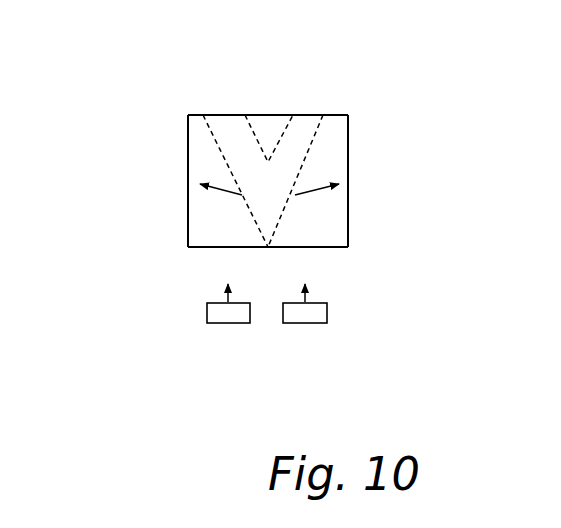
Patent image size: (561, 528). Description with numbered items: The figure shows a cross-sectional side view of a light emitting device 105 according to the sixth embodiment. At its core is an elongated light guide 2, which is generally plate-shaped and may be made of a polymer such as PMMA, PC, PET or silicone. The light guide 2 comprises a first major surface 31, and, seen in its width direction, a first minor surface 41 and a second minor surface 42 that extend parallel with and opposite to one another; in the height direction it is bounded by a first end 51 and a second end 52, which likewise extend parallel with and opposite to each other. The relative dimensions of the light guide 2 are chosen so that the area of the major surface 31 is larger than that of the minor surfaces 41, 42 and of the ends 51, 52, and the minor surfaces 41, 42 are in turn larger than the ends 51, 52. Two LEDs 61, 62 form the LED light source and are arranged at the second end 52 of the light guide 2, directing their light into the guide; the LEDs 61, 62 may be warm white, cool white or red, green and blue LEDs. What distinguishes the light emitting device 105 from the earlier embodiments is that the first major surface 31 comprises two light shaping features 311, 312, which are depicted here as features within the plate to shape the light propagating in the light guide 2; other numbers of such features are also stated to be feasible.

The light emitting device 105 is at (134, 82).
The elongated light guide 2 is at (192, 98).
The first major surface 31 is at (343, 163).
The light shaping feature 311 is at (283, 218).
The light shaping feature 312 is at (250, 130).
The first minor surface 41 is at (348, 198).
The second minor surface 42 is at (188, 165).
The first end 51 is at (198, 248).
The second end 52 is at (283, 114).
The LED 61 is at (225, 320).
The LED 62 is at (310, 322).